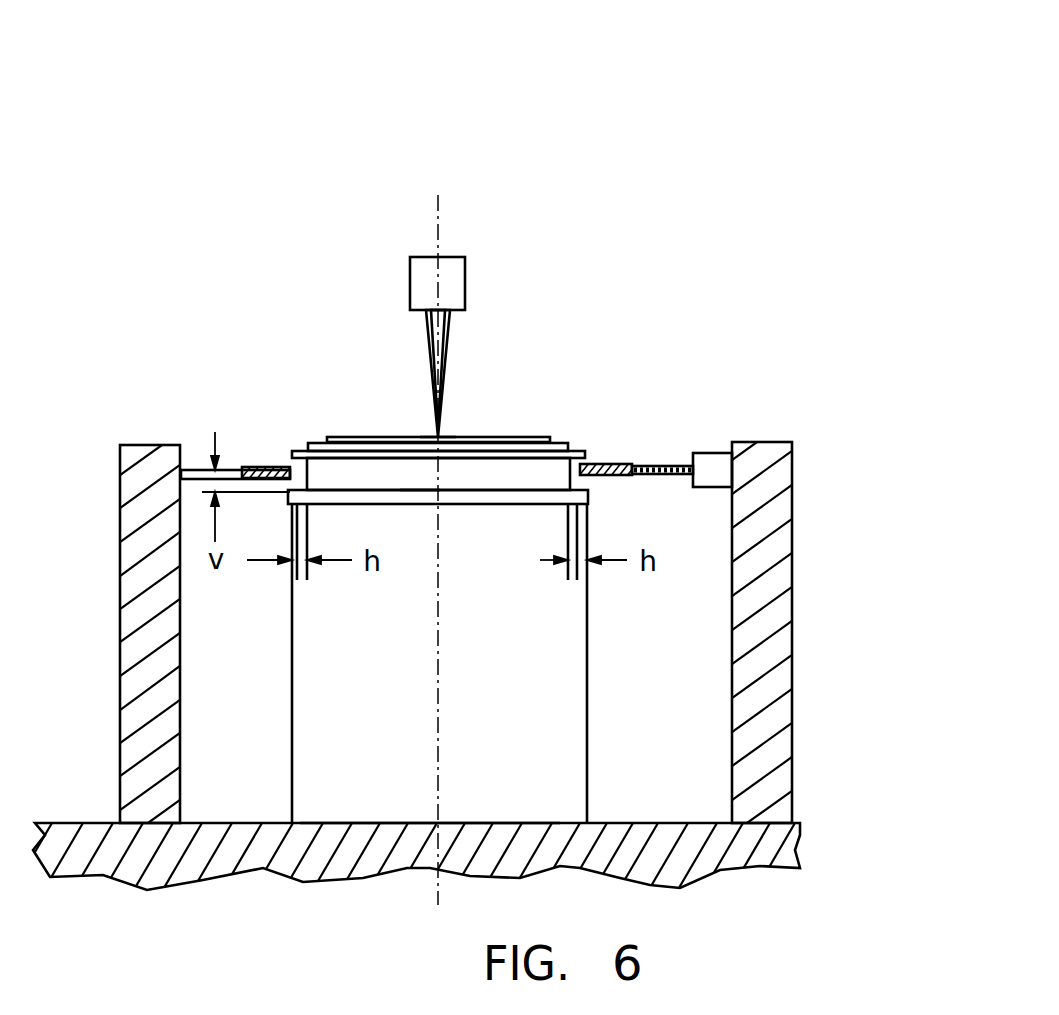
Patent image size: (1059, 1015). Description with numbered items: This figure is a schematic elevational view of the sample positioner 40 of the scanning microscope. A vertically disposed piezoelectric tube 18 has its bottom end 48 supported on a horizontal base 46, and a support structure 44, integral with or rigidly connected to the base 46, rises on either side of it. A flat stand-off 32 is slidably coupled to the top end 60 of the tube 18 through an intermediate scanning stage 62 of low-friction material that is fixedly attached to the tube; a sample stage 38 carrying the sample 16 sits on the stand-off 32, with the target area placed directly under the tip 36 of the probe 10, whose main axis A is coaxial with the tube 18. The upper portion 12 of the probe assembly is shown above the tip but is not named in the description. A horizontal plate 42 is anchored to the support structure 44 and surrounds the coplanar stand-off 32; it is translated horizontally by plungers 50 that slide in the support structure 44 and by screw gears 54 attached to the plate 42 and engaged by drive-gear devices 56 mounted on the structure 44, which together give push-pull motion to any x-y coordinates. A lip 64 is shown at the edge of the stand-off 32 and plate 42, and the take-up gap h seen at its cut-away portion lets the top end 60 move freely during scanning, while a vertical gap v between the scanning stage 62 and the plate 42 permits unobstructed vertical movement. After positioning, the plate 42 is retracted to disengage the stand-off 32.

The sample-positioning mechanism 40 is at (764, 156).
The support structure 44 is at (140, 452).
The horizontal base 46 is at (630, 835).
The bottom end 48 is at (423, 823).
The piezoelectric tube 18 is at (560, 733).
The plungers 50 is at (193, 467).
The horizontal plate 42 is at (262, 467).
The screw gears 54 is at (667, 465).
The drive-gear devices 56 is at (716, 452).
The lip 64 is at (297, 453).
The stand-off 32 is at (438, 472).
The top end 60 is at (480, 507).
The scanning stage 62 is at (423, 498).
The sample stage 38 is at (565, 447).
The sample 16 is at (547, 439).
The tip 36 is at (438, 437).
The nozzle body 12 is at (456, 292).
The probe 10 is at (443, 340).
The axis A is at (438, 700).